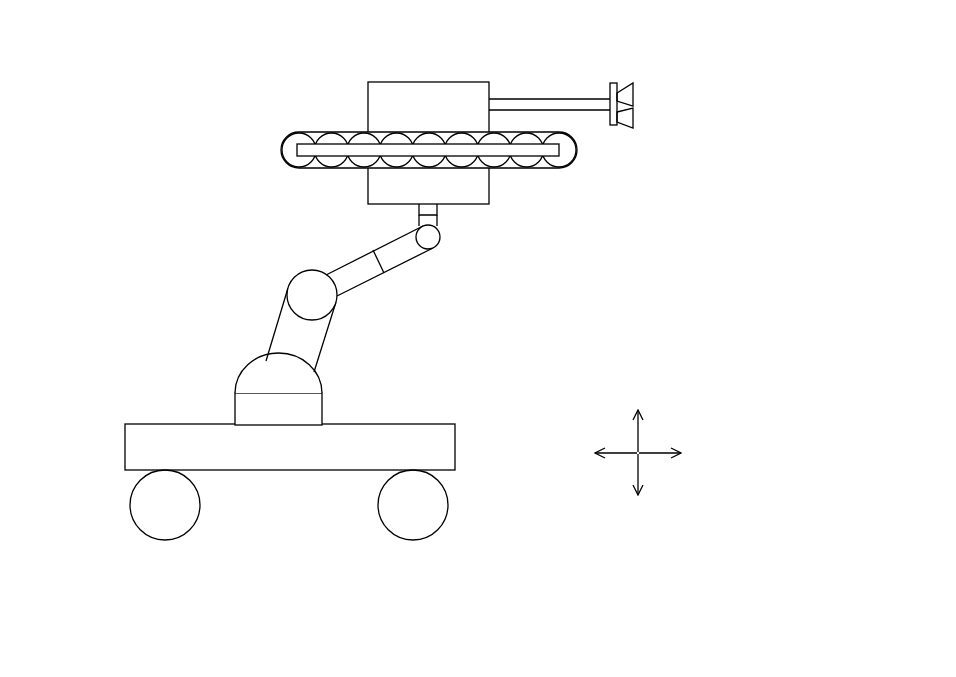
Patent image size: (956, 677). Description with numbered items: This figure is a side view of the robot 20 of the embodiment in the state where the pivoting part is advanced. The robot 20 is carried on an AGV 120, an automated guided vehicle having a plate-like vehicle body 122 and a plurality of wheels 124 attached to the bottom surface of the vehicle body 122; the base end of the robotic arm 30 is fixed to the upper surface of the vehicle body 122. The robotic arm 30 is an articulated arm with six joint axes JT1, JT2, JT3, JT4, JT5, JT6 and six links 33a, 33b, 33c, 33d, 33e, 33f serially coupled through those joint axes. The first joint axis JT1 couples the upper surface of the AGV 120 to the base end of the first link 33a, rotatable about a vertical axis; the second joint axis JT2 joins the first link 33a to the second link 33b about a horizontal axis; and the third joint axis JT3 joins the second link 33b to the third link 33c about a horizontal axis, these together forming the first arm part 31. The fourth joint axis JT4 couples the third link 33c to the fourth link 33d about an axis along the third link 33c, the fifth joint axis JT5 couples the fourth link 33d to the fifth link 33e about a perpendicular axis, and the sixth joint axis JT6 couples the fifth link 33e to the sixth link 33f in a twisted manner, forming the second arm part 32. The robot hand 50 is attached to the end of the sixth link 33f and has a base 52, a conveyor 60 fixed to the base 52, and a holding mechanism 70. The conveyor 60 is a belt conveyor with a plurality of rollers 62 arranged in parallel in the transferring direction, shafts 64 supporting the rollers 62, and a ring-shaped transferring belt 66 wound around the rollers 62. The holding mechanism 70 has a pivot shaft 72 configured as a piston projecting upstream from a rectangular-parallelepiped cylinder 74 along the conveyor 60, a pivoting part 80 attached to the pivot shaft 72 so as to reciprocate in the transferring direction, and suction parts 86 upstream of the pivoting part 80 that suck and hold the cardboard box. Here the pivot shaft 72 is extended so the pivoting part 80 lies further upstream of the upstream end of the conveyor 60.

The robot 20 is at (152, 129).
The robotic arm 30 is at (297, 267).
The first arm part 31 is at (269, 327).
The second arm part 32 is at (377, 249).
The first link 33a is at (321, 380).
The second link 33b is at (328, 337).
The third link 33c is at (355, 283).
The fourth link 33d is at (402, 266).
The fifth link 33e is at (438, 222).
The sixth link 33f is at (438, 208).
The first joint axis JT1 is at (235, 405).
The second joint axis JT2 is at (263, 358).
The third joint axis JT3 is at (290, 278).
The fourth joint axis JT4 is at (306, 235).
The fifth joint axis JT5 is at (438, 246).
The sixth joint axis JT6 is at (418, 209).
The robot hand 50 is at (287, 111).
The base 52 is at (477, 185).
The conveyor 60 is at (315, 131).
The rollers 62 is at (333, 167).
The shafts 64 is at (576, 149).
The transferring belt 66 is at (549, 126).
The holding mechanism 70 is at (374, 80).
The pivot shaft 72 is at (542, 98).
The cylinder 74 is at (443, 90).
The pivoting part 80 is at (615, 82).
The suction parts 86 is at (633, 116).
The AGV 120 is at (122, 436).
The vehicle body 122 is at (447, 440).
The wheels 124 is at (187, 512).